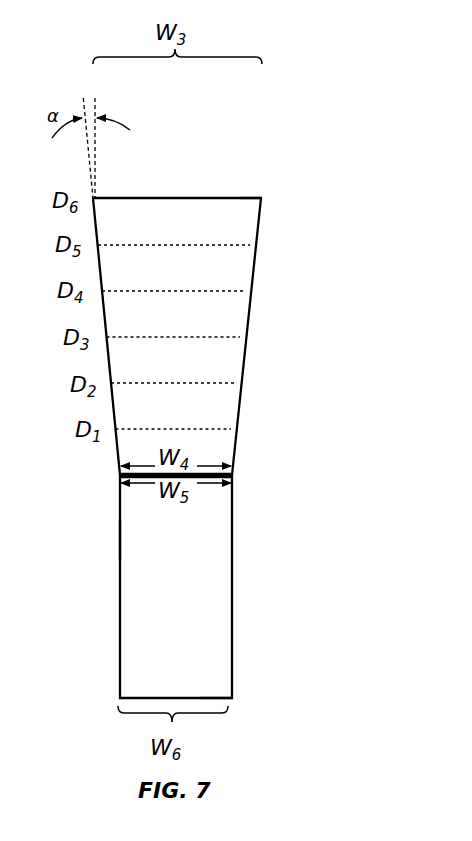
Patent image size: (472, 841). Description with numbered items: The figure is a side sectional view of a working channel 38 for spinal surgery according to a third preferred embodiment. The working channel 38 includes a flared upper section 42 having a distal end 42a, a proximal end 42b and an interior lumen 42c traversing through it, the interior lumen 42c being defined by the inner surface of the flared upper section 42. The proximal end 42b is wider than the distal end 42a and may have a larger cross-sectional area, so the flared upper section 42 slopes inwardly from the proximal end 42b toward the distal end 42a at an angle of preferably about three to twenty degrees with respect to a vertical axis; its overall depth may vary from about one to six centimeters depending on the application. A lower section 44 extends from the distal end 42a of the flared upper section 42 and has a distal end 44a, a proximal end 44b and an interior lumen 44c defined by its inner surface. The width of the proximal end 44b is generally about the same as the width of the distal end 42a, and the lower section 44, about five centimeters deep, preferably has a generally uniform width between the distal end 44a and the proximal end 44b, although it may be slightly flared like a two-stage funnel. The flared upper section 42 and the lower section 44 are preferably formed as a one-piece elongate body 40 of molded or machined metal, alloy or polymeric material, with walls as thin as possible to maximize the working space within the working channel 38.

The working channel 38 is at (272, 150).
The elongate body 40 is at (128, 548).
The flared upper section 42 is at (331, 198).
The distal end of the flared upper section 42a is at (232, 474).
The proximal end of the flared upper section 42b is at (248, 198).
The interior lumen of the flared upper section 42c is at (193, 325).
The lower section 44 is at (331, 478).
The distal end of the lower section 44a is at (232, 698).
The proximal end of the lower section 44b is at (232, 478).
The interior lumen of the lower section 44c is at (193, 598).